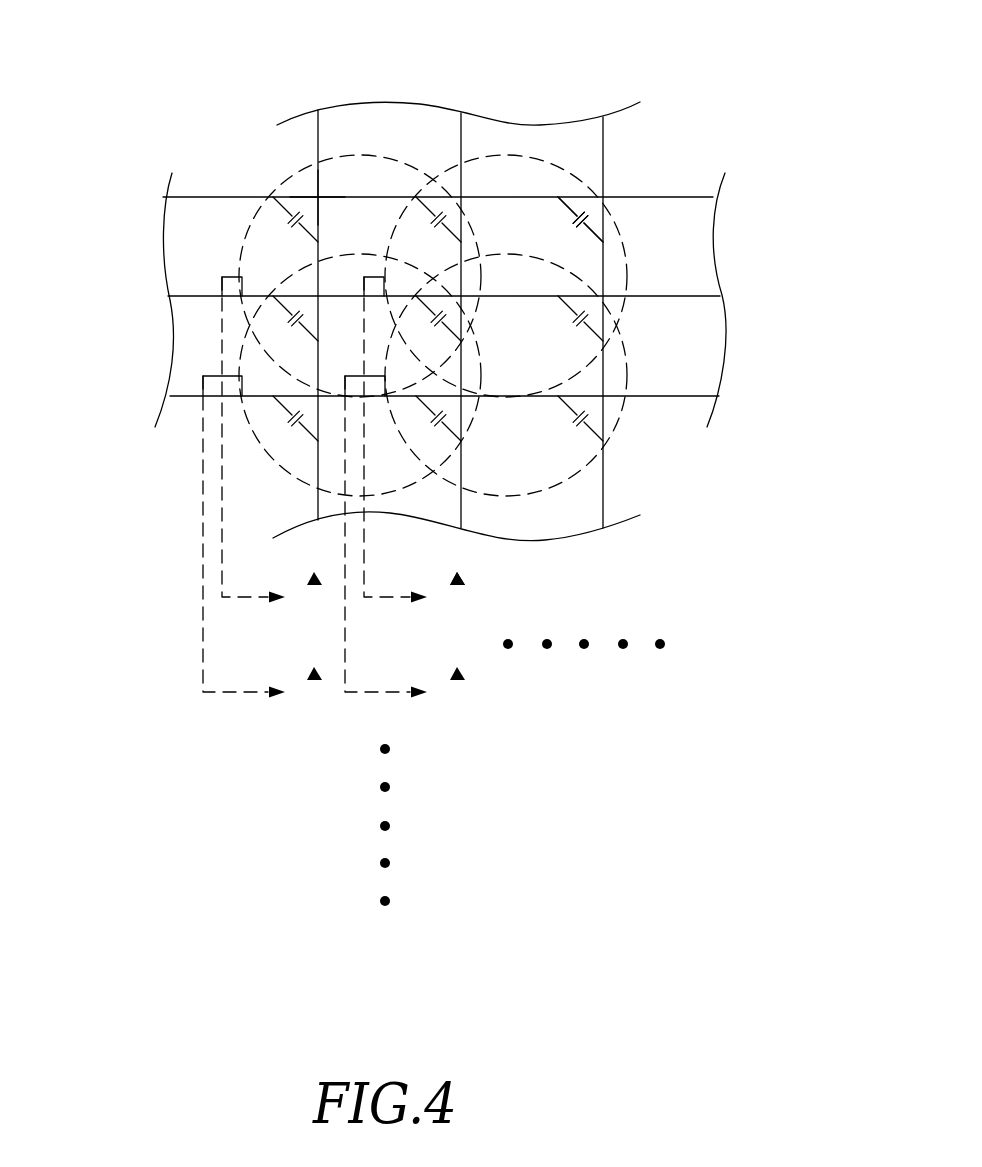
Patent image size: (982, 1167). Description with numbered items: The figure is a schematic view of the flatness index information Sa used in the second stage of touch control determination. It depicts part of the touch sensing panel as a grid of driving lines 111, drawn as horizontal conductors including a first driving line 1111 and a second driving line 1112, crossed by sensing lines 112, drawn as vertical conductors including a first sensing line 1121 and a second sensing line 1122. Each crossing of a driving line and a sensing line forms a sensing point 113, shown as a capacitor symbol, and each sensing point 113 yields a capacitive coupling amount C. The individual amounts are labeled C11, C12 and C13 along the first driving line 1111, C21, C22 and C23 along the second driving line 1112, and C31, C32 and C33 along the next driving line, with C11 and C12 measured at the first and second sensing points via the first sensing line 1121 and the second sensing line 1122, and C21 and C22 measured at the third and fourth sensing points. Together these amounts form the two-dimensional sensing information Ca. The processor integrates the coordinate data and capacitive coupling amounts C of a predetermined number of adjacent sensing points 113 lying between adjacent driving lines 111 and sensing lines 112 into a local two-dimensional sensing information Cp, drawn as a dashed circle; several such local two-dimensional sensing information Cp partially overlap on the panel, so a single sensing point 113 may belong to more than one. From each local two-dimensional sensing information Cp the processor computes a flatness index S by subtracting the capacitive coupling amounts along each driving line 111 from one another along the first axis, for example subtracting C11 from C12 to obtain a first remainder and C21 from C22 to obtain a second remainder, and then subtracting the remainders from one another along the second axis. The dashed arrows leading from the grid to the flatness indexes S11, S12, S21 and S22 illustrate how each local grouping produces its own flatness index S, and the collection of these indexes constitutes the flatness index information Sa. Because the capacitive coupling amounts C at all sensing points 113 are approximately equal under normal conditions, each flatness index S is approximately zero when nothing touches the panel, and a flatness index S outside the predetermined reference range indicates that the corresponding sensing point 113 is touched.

The driving lines 111 is at (126, 113).
The first driving line 1111 is at (227, 197).
The second driving line 1112 is at (200, 296).
The sensing lines 112 is at (538, 42).
The first sensing line 1121 is at (318, 143).
The second sensing line 1122 is at (462, 143).
The sensing point 113 is at (316, 192).
The capacitive coupling amount C is at (592, 263).
The 2D sensing information Ca is at (773, 292).
The local 2D sensing information Cp is at (622, 418).
The capacitive coupling amount C11 is at (290, 225).
The capacitive coupling amount C12 is at (432, 225).
The capacitor C13 is at (574, 225).
The capacitive coupling amount C21 is at (290, 324).
The capacitive coupling amount C22 is at (432, 324).
The capacitor C23 is at (574, 324).
The capacitor C31 is at (290, 424).
The capacitor C32 is at (432, 424).
The capacitor C33 is at (574, 424).
The flatness index S is at (490, 598).
The flatness index information Sa is at (568, 584).
The sensing unit S11 is at (279, 449).
The sensing unit S12 is at (269, 546).
The sensing unit S21 is at (421, 449).
The sensing unit S22 is at (412, 546).